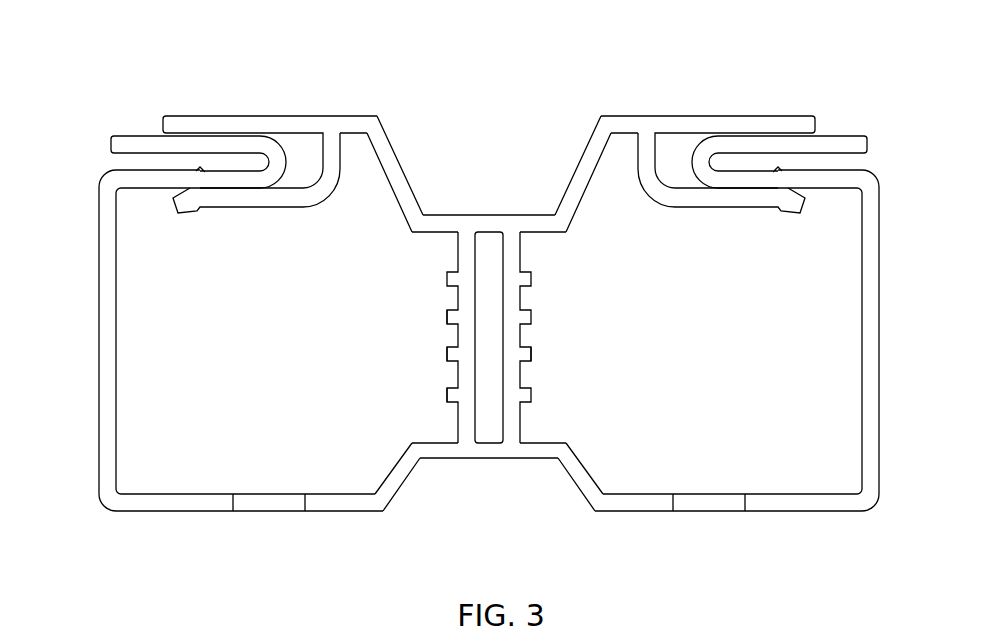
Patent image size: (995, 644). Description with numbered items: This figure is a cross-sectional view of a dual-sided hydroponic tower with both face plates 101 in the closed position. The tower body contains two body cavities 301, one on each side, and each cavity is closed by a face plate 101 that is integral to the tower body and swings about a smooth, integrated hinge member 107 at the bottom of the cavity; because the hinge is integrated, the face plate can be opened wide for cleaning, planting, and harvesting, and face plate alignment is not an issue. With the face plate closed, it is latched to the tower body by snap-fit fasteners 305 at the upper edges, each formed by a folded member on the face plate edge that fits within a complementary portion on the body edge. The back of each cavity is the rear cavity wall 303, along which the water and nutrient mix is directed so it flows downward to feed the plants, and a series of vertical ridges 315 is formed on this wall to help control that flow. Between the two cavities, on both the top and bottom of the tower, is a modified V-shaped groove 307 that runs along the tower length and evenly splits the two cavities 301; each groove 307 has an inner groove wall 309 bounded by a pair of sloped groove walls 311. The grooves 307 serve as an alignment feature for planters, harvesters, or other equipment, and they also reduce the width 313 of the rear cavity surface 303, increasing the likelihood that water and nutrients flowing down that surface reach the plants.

The face plate 101 is at (107, 287).
The hinge member 107 is at (273, 503).
The body cavity 301 is at (232, 349).
The rear cavity wall 303 is at (525, 314).
The snap-fit fastener 305 is at (135, 118).
The modified V-shaped groove 307 is at (483, 162).
The inner groove wall 309 is at (484, 238).
The sloped groove wall 311 is at (397, 178).
The width of rear cavity surface 313 is at (553, 237).
The vertical ridges 315 is at (450, 398).